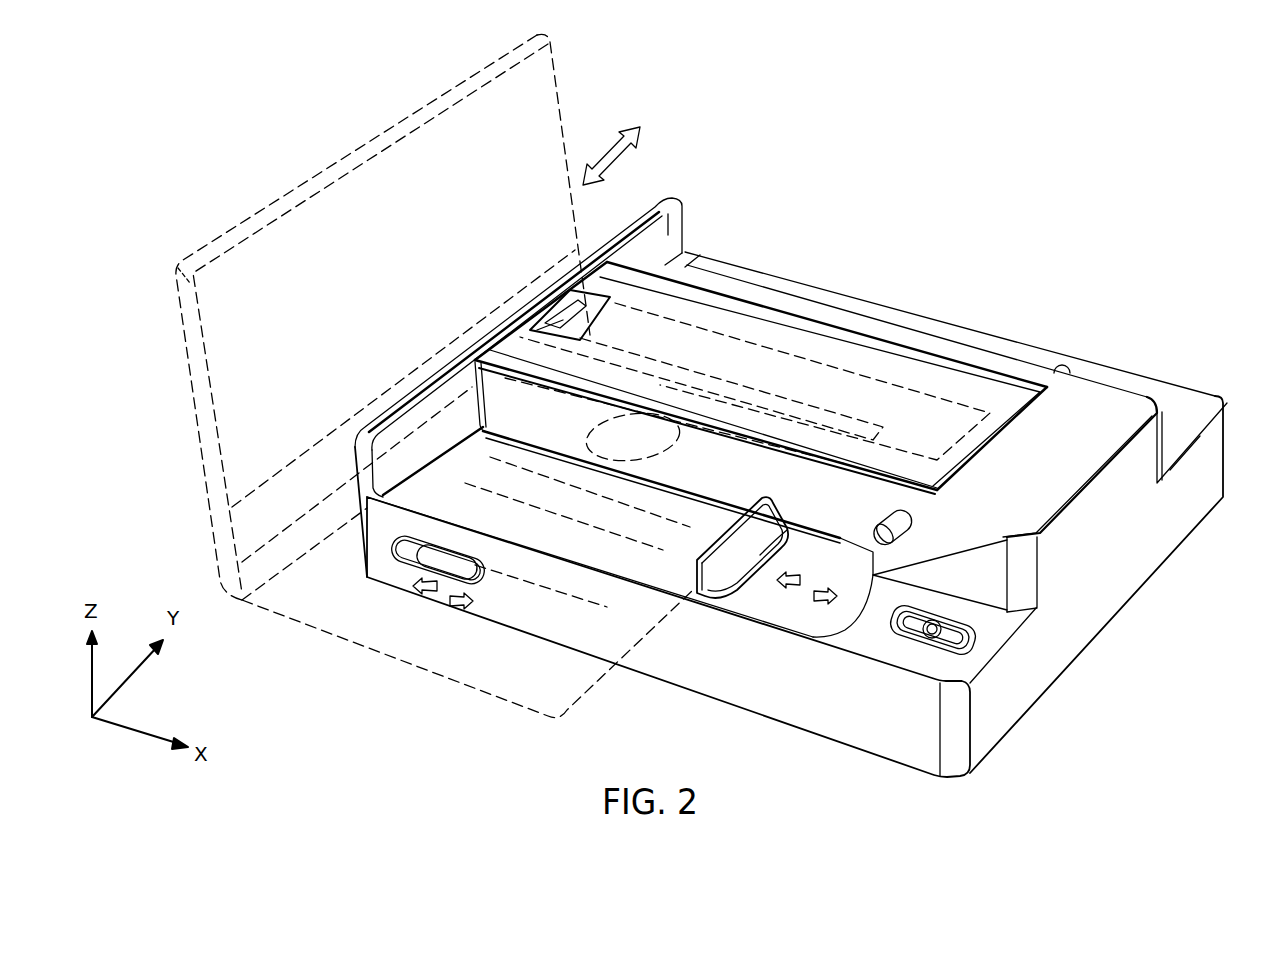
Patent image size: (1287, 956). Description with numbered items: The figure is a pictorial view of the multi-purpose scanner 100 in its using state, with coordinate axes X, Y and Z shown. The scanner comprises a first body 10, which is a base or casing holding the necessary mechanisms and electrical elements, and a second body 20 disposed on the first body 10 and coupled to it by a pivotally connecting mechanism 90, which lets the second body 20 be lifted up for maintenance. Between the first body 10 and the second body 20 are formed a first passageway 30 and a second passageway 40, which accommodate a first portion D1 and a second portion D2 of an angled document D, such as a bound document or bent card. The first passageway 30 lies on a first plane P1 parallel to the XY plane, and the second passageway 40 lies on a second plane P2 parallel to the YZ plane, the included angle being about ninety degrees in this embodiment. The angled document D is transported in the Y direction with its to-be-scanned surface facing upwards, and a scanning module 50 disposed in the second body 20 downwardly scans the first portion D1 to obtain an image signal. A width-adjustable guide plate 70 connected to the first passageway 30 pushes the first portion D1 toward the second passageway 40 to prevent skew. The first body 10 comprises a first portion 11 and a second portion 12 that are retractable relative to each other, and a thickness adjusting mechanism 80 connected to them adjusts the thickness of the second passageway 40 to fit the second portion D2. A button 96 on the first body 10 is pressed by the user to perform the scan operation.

The multi-purpose scanner 100 is at (909, 296).
The first body 10 is at (640, 677).
The first portion 11 is at (565, 630).
The second portion 12 is at (357, 523).
The second body 20 is at (950, 377).
The first passageway 30 is at (600, 472).
The second passageway 40 is at (470, 393).
The scanning module 50 is at (788, 490).
The width-adjustable guide plate 70 is at (730, 558).
The thickness adjusting mechanism 80 is at (452, 572).
The pivotally connecting mechanism 90 is at (905, 522).
The button 96 is at (923, 643).
The angled document D is at (265, 199).
The first portion D1 is at (290, 620).
The second portion D2 is at (207, 390).
The first plane P1 is at (1183, 398).
The second plane P2 is at (673, 232).